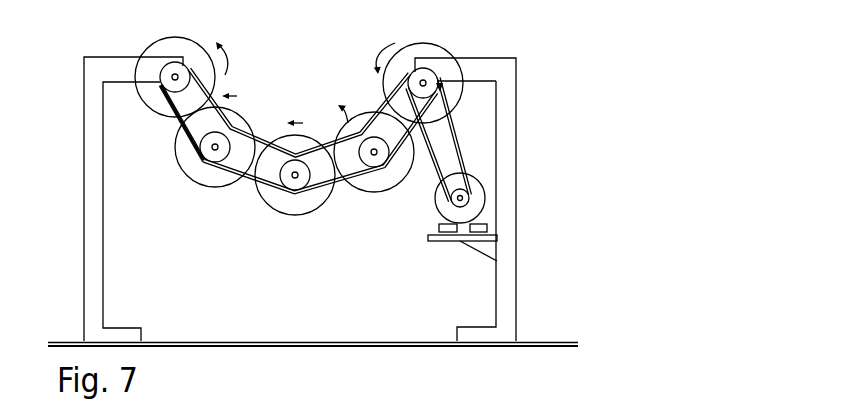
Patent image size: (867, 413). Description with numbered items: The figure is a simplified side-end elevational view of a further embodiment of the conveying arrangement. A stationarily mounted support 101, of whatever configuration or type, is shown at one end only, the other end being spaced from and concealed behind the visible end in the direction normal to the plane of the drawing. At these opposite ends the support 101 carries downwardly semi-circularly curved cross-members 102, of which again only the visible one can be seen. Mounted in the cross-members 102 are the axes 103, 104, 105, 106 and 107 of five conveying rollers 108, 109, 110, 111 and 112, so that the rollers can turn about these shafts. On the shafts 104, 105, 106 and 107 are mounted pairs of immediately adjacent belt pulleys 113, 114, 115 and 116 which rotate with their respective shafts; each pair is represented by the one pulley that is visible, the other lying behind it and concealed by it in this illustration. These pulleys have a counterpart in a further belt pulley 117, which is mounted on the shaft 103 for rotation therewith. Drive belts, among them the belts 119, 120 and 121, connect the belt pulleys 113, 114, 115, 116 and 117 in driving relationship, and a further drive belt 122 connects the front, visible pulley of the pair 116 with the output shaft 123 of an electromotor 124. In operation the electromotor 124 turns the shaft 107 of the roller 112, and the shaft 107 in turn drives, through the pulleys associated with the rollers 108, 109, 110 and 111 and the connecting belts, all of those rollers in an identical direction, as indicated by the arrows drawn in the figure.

The support 101 is at (522, 151).
The cross-member 102 is at (233, 160).
The axis (shaft) 103 is at (155, 79).
The axis (shaft) 104 is at (205, 150).
The axis (shaft) 105 is at (297, 182).
The axis (shaft) 106 is at (412, 176).
The axis (shaft) 107 is at (430, 80).
The conveying roller 108 is at (178, 45).
The conveying roller 109 is at (238, 127).
The conveying roller 110 is at (308, 141).
The conveying roller 111 is at (357, 127).
The conveying roller 112 is at (432, 52).
The belt pulley pair 113 is at (194, 131).
The belt pulley pair 114 is at (282, 171).
The belt pulley pair 115 is at (375, 162).
The belt pulley pair 116 is at (442, 88).
The belt pulley 117 is at (176, 66).
The drive belt 119 is at (263, 142).
The drive belt 120 is at (345, 181).
The drive belt 121 is at (400, 68).
The drive belt 122 is at (428, 128).
The output shaft 123 is at (470, 198).
The electromotor 124 is at (474, 208).